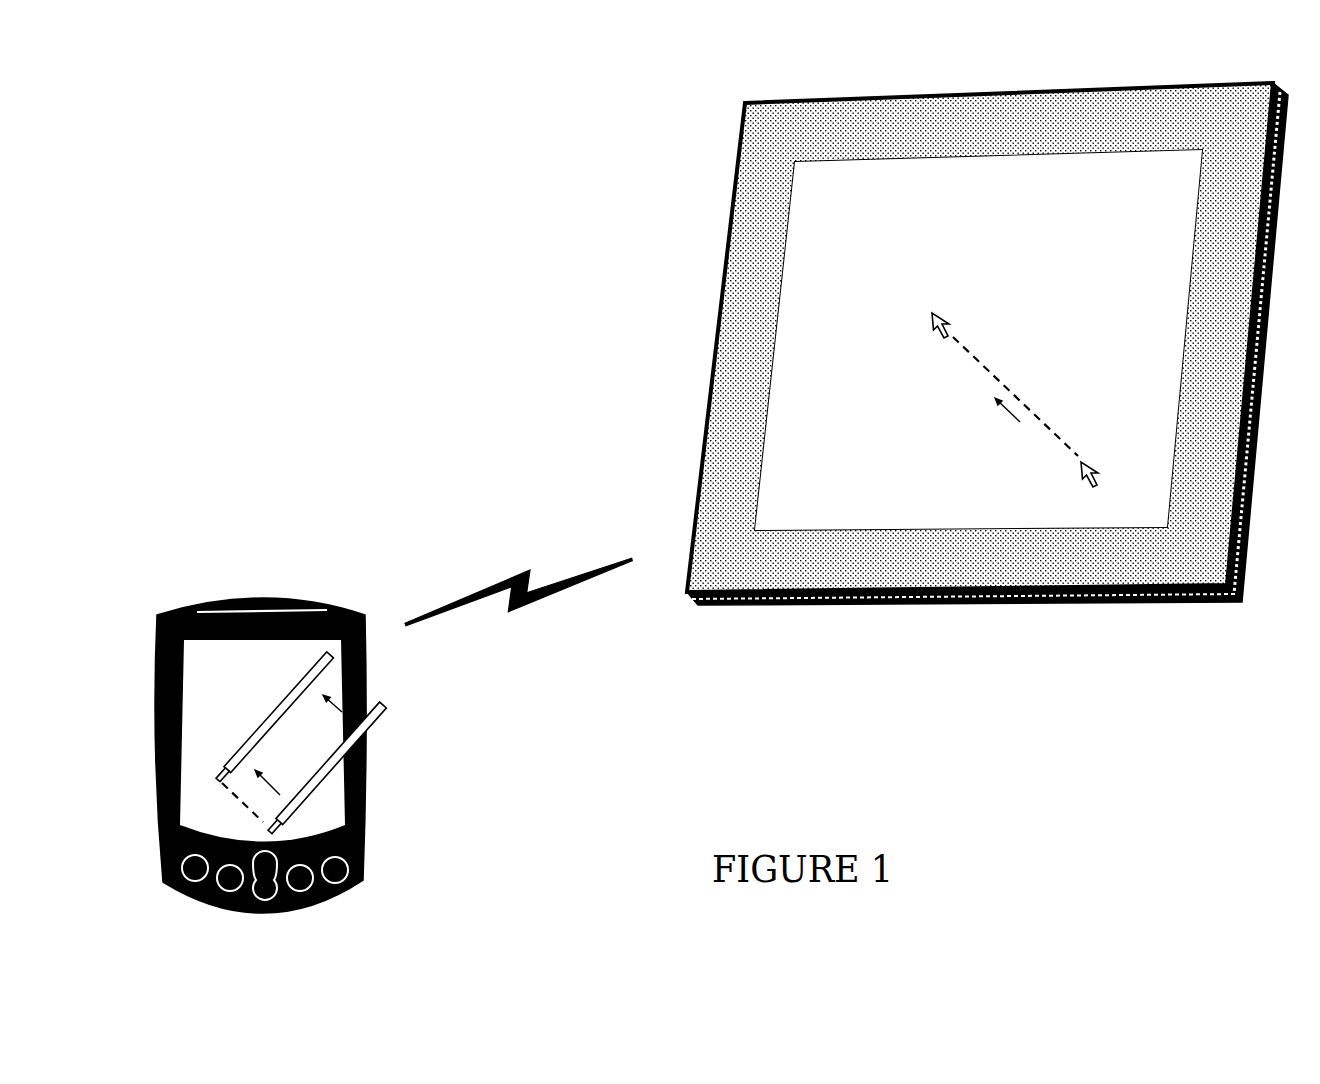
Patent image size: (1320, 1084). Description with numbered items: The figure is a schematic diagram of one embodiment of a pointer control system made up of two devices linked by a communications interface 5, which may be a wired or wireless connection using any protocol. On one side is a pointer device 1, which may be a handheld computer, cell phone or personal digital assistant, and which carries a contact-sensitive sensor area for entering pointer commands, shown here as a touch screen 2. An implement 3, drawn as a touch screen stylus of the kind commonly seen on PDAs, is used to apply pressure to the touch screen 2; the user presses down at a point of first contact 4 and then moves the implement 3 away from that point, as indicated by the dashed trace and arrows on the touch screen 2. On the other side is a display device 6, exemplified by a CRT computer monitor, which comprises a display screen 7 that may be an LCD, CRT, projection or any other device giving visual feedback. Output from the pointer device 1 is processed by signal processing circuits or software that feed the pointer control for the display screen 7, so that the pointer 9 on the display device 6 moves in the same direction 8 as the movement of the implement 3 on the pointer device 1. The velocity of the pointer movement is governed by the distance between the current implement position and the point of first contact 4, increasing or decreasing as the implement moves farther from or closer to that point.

The pointer device 1 is at (212, 603).
The touch screen 2 is at (257, 680).
The implement 3 is at (358, 735).
The point of first contact 4 is at (248, 810).
The communications interface 5 is at (520, 620).
The display device 6 is at (826, 558).
The display screen 7 is at (922, 498).
The direction 8 is at (987, 378).
The pointer 9 is at (930, 326).